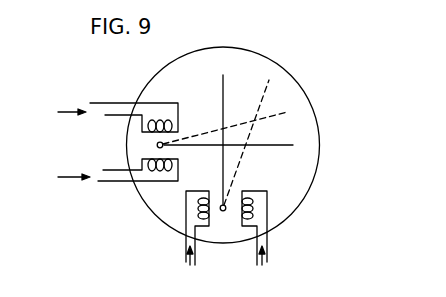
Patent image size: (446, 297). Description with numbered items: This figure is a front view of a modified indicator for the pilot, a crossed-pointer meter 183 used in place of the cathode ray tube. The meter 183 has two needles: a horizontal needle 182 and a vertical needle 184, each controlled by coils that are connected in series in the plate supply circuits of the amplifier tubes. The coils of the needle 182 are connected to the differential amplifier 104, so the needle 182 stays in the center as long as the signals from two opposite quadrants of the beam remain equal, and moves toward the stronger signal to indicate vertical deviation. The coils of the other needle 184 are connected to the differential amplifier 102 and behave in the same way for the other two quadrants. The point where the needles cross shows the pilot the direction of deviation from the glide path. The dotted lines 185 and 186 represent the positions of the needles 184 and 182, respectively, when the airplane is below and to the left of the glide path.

The needle 182 is at (280, 145).
The meter 183 is at (300, 82).
The needle 184 is at (223, 85).
The dotted line 185 is at (269, 80).
The dotted line 186 is at (287, 112).
The differential amplifier 104 is at (99, 142).
The differential amplifier 102 is at (238, 240).